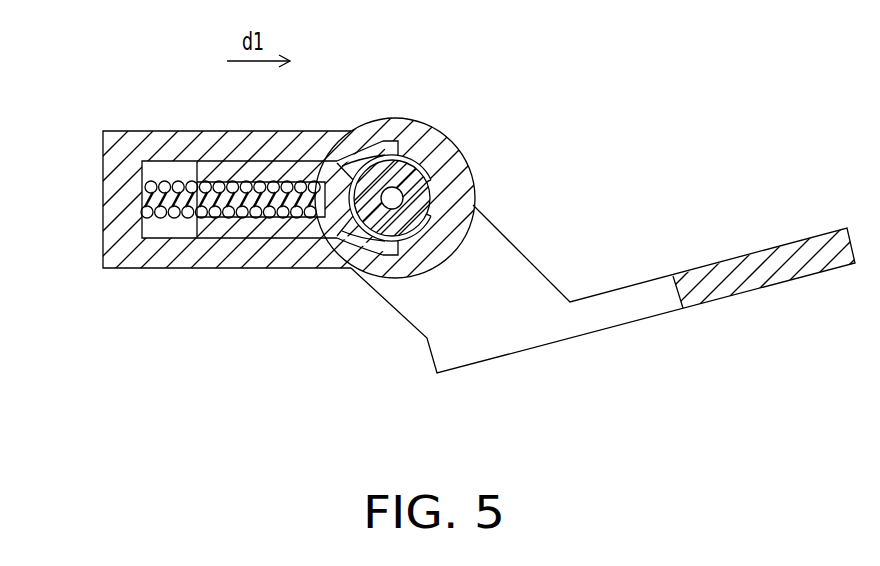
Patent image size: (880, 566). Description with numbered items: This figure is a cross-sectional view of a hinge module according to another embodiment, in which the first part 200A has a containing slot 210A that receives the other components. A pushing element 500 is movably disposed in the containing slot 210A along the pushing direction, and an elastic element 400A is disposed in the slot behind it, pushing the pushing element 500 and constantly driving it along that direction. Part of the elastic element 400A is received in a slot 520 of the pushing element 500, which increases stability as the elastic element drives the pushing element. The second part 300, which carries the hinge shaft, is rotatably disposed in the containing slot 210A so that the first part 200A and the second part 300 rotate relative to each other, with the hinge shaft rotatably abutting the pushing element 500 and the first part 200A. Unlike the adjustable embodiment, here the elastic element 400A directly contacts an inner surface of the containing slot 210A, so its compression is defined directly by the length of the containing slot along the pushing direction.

The first part 200A is at (145, 258).
The containing slot 210A is at (155, 233).
The second part 300 is at (515, 325).
The elastic element 400A is at (202, 220).
The pushing element 500 is at (254, 170).
The slot 520 is at (263, 217).